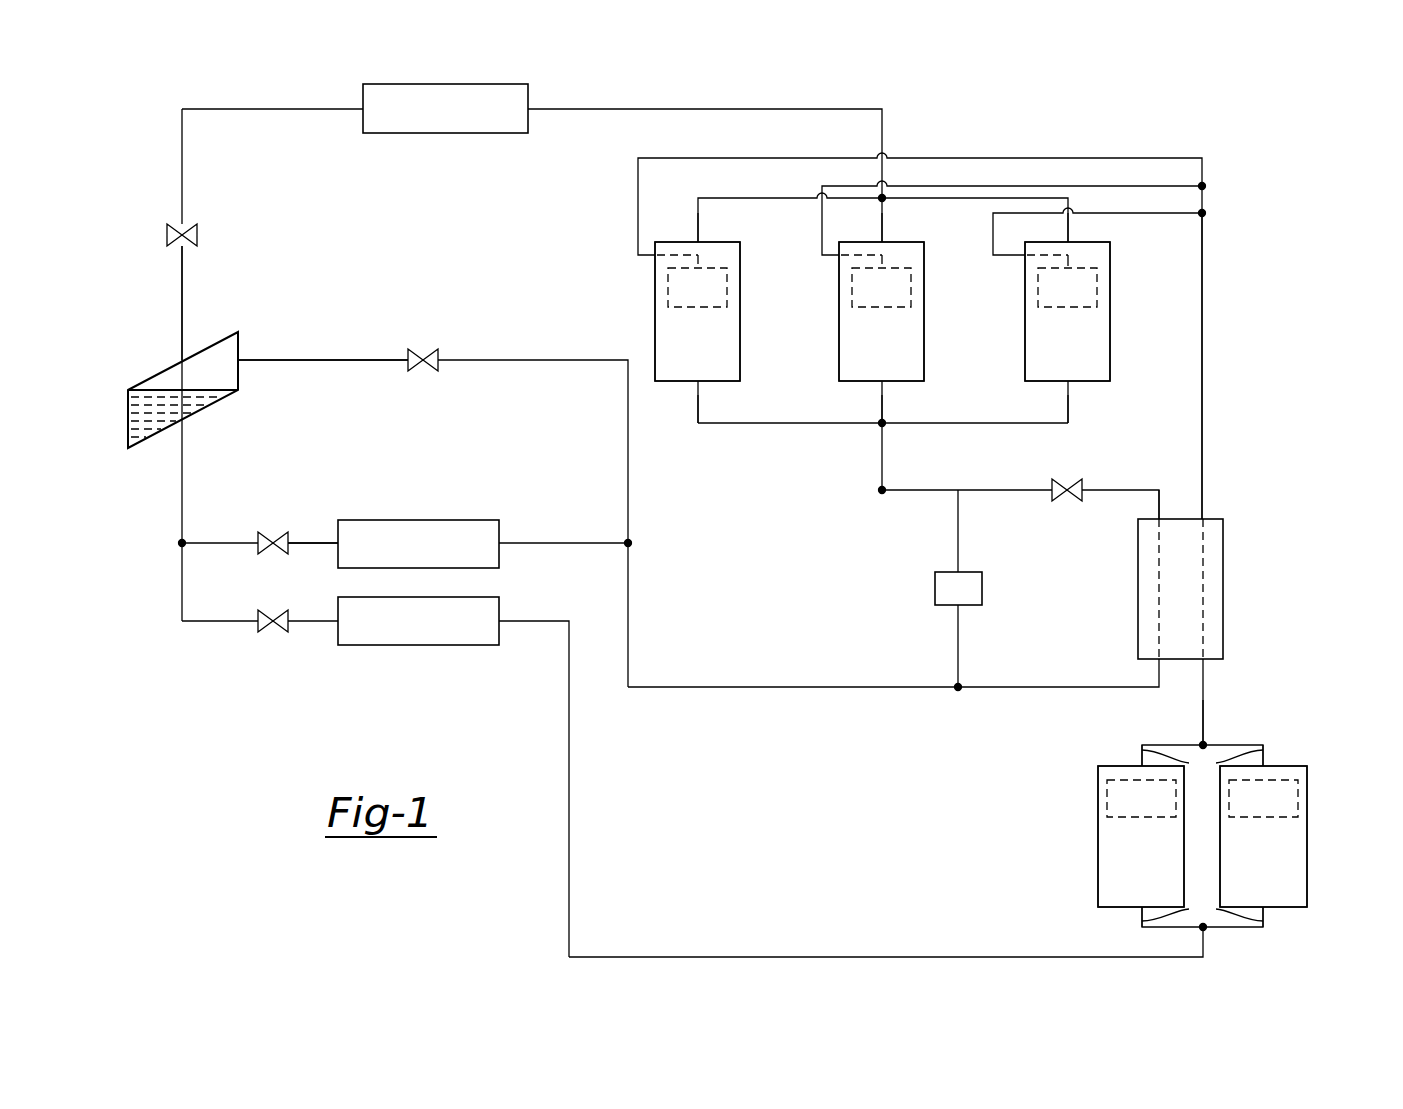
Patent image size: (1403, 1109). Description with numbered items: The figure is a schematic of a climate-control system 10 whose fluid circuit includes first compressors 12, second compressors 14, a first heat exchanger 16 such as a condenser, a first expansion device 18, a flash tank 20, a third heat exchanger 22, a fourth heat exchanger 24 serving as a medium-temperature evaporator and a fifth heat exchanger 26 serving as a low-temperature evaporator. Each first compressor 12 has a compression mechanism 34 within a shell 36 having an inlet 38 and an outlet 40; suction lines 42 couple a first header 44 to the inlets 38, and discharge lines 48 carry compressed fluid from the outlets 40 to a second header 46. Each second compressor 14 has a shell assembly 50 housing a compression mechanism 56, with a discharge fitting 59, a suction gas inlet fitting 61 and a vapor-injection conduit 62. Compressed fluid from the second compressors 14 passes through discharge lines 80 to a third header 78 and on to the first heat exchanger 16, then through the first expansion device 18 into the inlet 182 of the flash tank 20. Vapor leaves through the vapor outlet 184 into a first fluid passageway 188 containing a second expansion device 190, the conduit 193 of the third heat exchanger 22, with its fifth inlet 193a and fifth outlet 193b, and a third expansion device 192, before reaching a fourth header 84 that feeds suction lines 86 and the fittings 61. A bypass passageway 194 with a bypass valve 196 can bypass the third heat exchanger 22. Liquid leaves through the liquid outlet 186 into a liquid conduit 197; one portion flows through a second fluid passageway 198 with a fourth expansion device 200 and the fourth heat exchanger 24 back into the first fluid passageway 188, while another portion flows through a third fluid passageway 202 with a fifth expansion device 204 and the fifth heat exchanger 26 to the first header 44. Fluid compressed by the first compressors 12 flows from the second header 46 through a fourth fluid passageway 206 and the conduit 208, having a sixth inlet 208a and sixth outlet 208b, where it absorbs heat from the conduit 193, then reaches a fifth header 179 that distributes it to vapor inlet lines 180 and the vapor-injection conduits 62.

The climate-control system 10 is at (540, 708).
The first compressor 12 is at (1095, 847).
The second compressor 14 is at (743, 342).
The first heat exchanger 16 is at (363, 103).
The first expansion device 18 is at (167, 234).
The flash tank 20 is at (150, 369).
The third heat exchanger 22 is at (1229, 605).
The fourth heat exchanger 24 is at (500, 537).
The fifth heat exchanger 26 is at (500, 614).
The compression mechanism 34 is at (1122, 817).
The shell 36 is at (1098, 830).
The inlet 38 is at (1142, 907).
The outlet 40 is at (1142, 765).
The suction line 42 is at (1202, 917).
The first header 44 is at (1210, 937).
The second header 46 is at (1216, 741).
The discharge line 48 is at (1202, 760).
The hermetic shell assembly 50 is at (653, 286).
The compression mechanism 56 is at (698, 307).
The discharge fitting 59 is at (697, 238).
The suction gas inlet fitting 61 is at (696, 385).
The vapor-injection conduit 62 is at (700, 262).
The third header 78 is at (786, 192).
The discharge line 80 is at (697, 212).
The fourth header 84 is at (864, 446).
The suction line 86 is at (700, 405).
The fifth header 179 is at (1217, 203).
The vapor inlet line 180 is at (1177, 213).
The inlet 182 is at (183, 358).
The vapor outlet 184 is at (240, 362).
The liquid outlet 186 is at (182, 424).
The first fluid passageway 188 is at (366, 356).
The second expansion device 190 is at (438, 356).
The third expansion device 192 is at (1082, 485).
The conduit 193 is at (1158, 583).
The fifth inlet 193a is at (1158, 660).
The fifth outlet 193b is at (1158, 519).
The bypass passageway 194 is at (954, 531).
The bypass valve 196 is at (935, 590).
The liquid conduit 197 is at (183, 487).
The second fluid passageway 198 is at (312, 538).
The fourth expansion device 200 is at (258, 550).
The third fluid passageway 202 is at (231, 625).
The fifth expansion device 204 is at (290, 627).
The fourth fluid passageway 206 is at (1218, 318).
The conduit 208 is at (1203, 578).
The sixth inlet 208a is at (1203, 660).
The sixth outlet 208b is at (1203, 518).